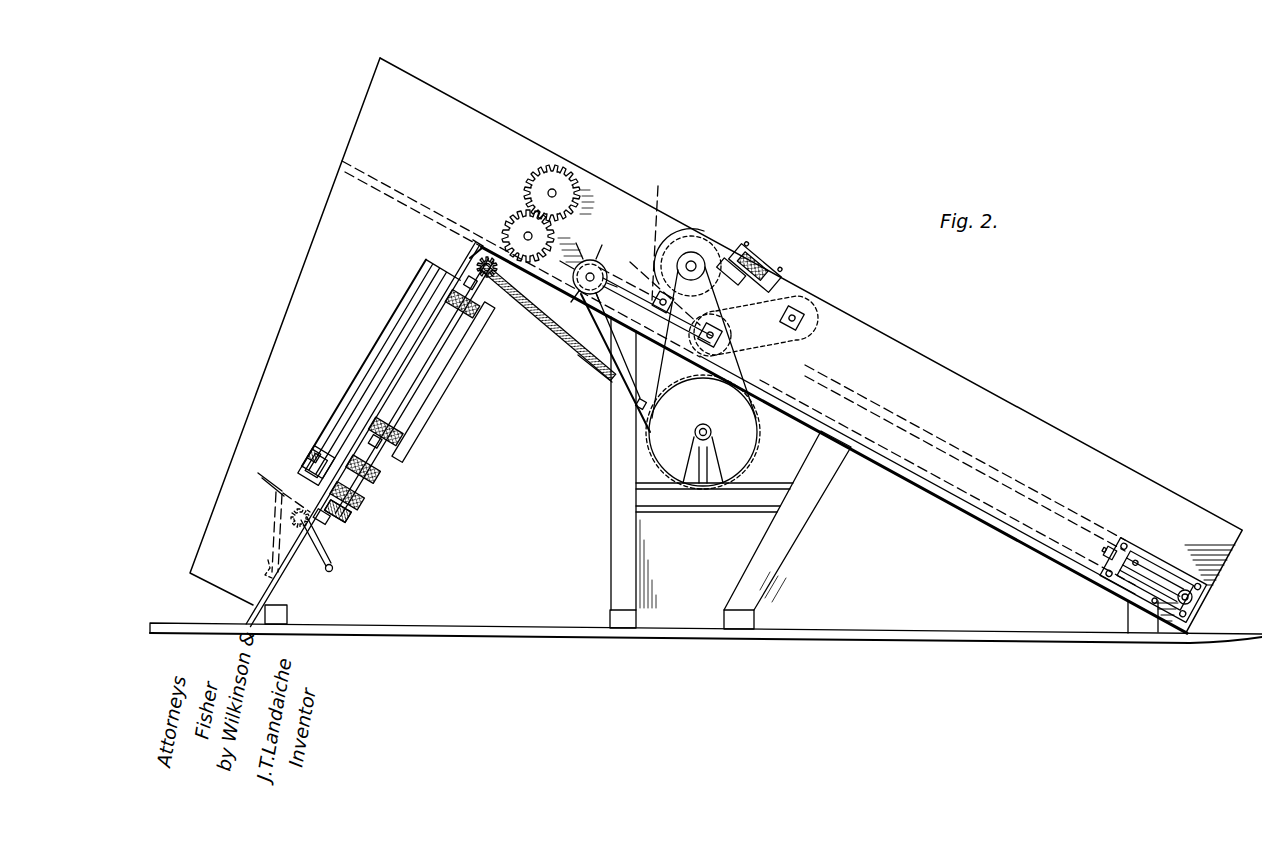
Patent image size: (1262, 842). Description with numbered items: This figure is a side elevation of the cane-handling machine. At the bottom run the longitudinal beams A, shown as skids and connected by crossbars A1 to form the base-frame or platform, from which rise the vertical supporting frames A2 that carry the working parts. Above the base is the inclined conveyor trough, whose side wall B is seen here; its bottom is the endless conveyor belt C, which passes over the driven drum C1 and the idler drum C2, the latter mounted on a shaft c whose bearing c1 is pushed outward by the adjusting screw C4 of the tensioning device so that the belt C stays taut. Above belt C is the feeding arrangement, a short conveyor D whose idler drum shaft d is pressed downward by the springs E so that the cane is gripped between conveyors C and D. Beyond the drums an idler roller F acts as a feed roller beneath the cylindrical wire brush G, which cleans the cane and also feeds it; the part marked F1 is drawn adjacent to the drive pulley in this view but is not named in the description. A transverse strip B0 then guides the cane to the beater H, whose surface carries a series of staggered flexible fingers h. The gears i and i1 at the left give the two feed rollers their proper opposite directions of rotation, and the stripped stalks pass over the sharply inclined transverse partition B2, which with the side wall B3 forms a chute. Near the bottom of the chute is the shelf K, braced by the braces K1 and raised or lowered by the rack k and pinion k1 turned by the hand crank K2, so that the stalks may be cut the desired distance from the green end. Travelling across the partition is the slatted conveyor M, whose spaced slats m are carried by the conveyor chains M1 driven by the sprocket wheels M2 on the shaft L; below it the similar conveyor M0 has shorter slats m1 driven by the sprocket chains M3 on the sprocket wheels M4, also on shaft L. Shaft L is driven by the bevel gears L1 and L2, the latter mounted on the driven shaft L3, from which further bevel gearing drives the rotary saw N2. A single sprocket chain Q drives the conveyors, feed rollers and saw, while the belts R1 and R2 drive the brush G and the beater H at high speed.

The longitudinal beams A is at (481, 640).
The crossbars A1 is at (287, 613).
The vertical supporting frames A2 is at (610, 562).
The side wall of conveyor trough B is at (1022, 420).
The transverse strip B0 is at (632, 272).
The transverse partition B2 is at (290, 568).
The side wall of chute B3 is at (272, 355).
The endless conveyor belt C is at (1042, 492).
The driven drum C1 is at (712, 396).
The idler drum C2 is at (1150, 548).
The bearing c1 is at (1187, 585).
The adjusting screw C4 is at (1105, 556).
The shaft c is at (1158, 612).
The short conveyor D is at (820, 320).
The shaft of idler drum d is at (798, 312).
The springs E is at (762, 262).
The idler roller F is at (592, 494).
The pulley arm F1 is at (696, 438).
The brush G is at (690, 250).
The beater H is at (560, 330).
The staggered fingers h is at (590, 258).
The gear i is at (553, 170).
The gear i1 is at (512, 217).
The shelf K is at (257, 474).
The braces K1 is at (280, 508).
The hand crank K2 is at (336, 570).
The rack k is at (262, 570).
The pinion k1 is at (292, 520).
The shaft L is at (425, 410).
The bevel gear L1 is at (478, 262).
The bevel gear L2 is at (478, 235).
The driven shaft L3 is at (482, 257).
The slatted conveyor M is at (462, 384).
The lower slatted conveyor M0 is at (372, 512).
The conveyor chains M1 is at (470, 330).
The sprocket wheels M2 is at (465, 312).
The sprocket chains M3 is at (365, 505).
The sprocket wheels M4 is at (370, 485).
The rotary saw N2 is at (380, 462).
The slats m is at (372, 400).
The shorter slats m1 is at (328, 463).
The sprocket chain Q is at (580, 358).
The belt R1 is at (665, 380).
The belt R2 is at (620, 377).